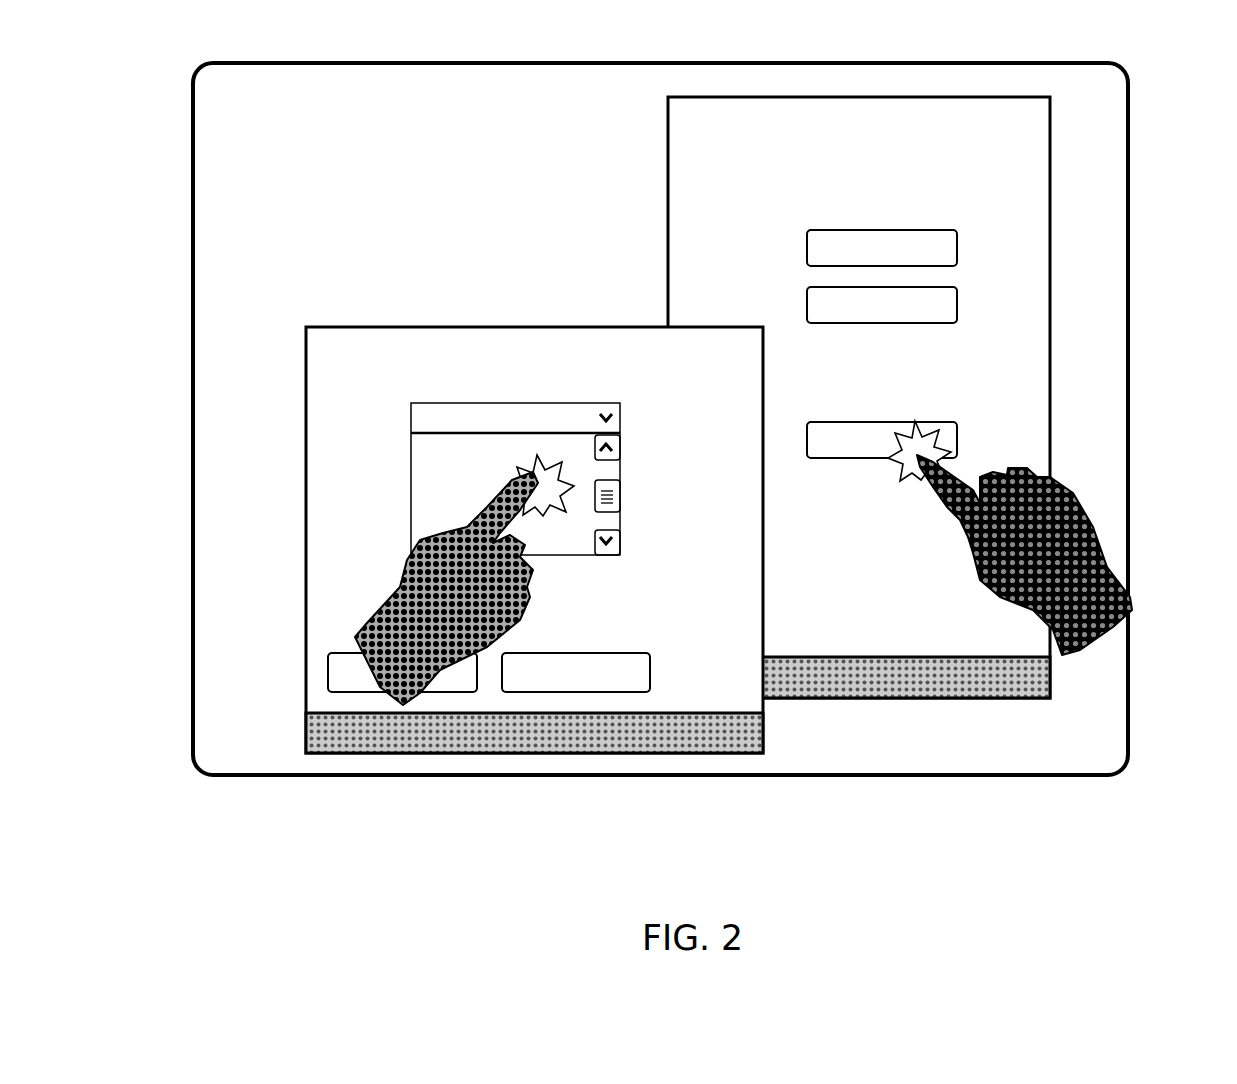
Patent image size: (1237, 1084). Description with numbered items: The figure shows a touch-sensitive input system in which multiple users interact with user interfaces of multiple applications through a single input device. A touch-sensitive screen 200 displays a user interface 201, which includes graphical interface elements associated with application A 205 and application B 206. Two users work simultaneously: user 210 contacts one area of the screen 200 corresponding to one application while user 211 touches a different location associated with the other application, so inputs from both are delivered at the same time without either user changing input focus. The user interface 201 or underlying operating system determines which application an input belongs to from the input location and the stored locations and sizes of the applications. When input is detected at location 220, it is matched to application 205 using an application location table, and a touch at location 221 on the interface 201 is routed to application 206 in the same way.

The touch-sensitive screen 200 is at (1132, 120).
The user interface 201 is at (428, 172).
The application A 205 is at (398, 384).
The application B 206 is at (839, 182).
The user 210 is at (523, 592).
The user 211 is at (1005, 590).
The location 220 is at (513, 464).
The location 221 is at (938, 435).